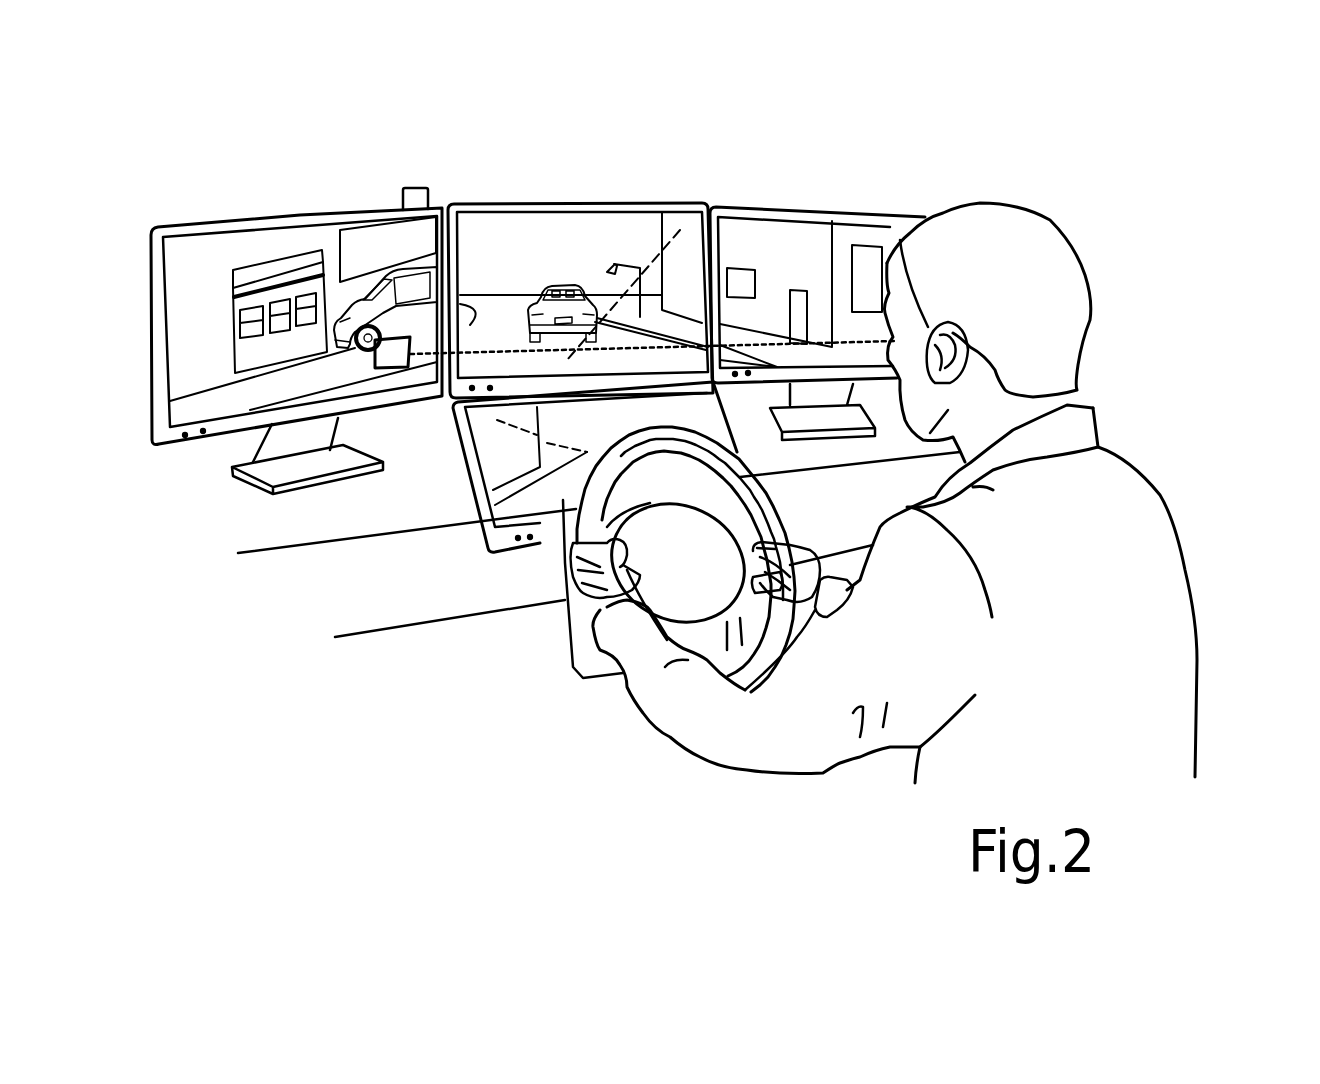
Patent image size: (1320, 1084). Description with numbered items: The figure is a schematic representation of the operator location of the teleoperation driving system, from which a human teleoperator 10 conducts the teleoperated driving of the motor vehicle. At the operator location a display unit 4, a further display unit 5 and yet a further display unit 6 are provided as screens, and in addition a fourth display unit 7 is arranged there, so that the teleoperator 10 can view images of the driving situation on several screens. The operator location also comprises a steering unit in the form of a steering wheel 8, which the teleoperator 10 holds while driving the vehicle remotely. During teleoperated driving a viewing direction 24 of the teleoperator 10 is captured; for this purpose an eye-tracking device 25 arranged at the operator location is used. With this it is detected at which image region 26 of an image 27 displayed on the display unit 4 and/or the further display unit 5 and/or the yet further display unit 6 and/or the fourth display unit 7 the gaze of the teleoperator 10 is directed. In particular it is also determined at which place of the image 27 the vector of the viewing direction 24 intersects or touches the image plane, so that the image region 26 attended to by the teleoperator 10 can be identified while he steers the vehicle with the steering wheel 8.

The display unit 4 is at (268, 217).
The further display unit 5 is at (597, 203).
The yet a further display unit 6 is at (793, 208).
The fourth display unit 7 is at (483, 525).
The steering wheel 8 is at (777, 510).
The teleoperator 10 is at (1176, 534).
The viewing direction 24 is at (748, 343).
The eye-tracking device 25 is at (417, 190).
The image region 26 is at (387, 370).
The image 27 is at (310, 237).